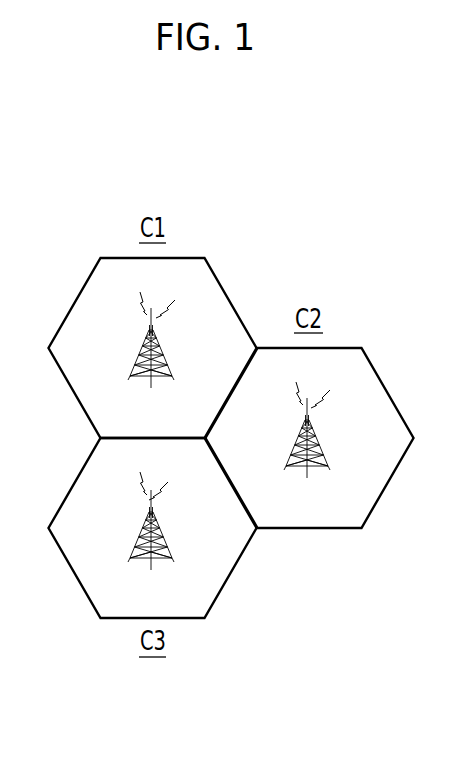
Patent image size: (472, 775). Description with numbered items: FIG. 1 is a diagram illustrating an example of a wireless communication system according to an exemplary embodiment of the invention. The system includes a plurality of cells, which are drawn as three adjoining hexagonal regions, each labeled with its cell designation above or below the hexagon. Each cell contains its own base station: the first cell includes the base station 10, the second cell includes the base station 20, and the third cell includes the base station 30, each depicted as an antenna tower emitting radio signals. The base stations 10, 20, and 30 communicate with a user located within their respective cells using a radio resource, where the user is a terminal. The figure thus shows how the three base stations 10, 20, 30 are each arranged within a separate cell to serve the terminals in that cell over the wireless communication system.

The base station 10 is at (143, 345).
The base station 20 is at (316, 438).
The base station 30 is at (158, 527).